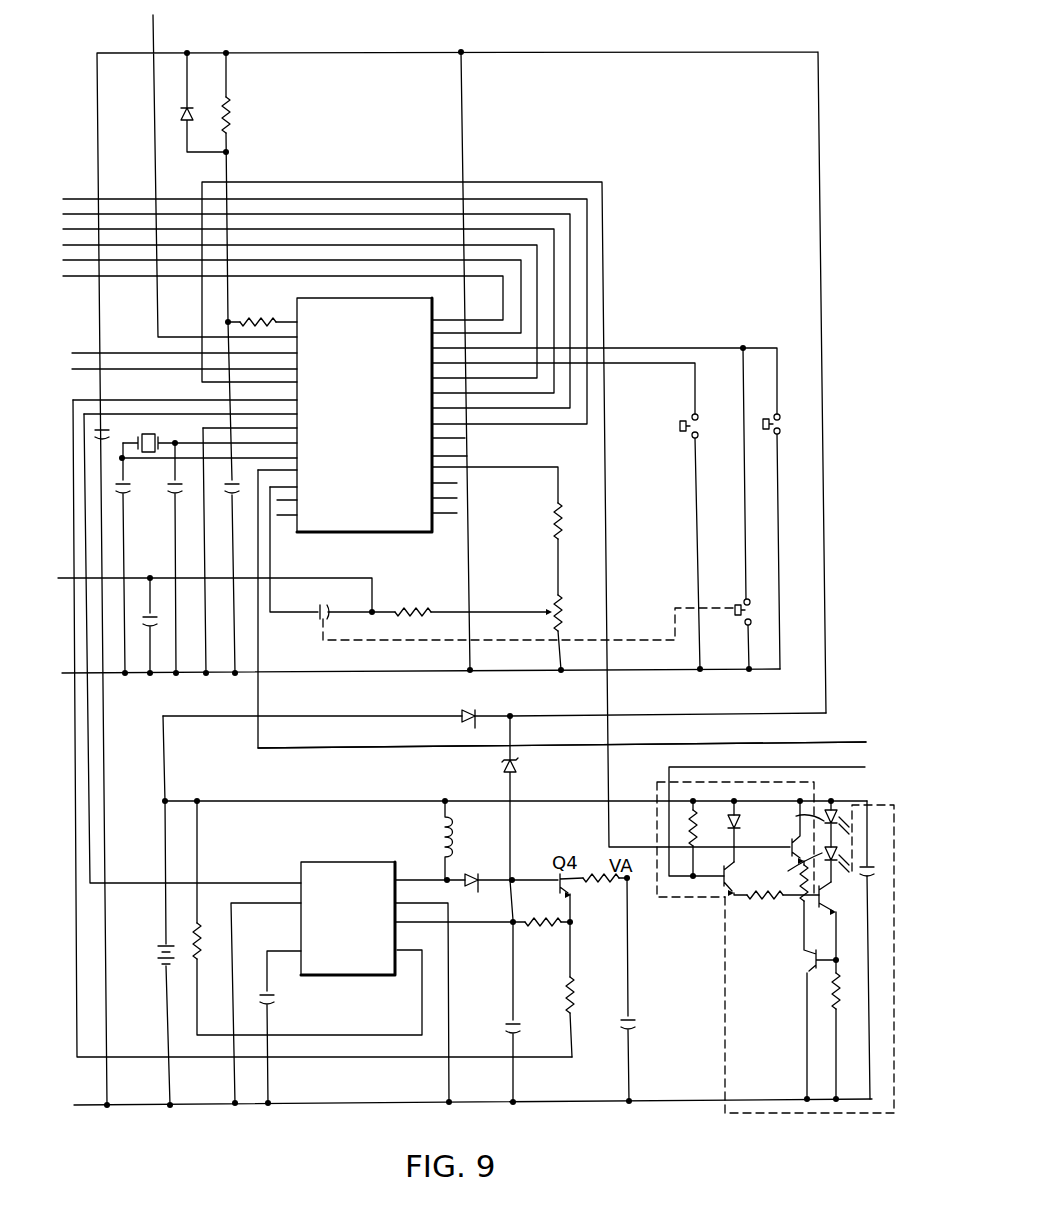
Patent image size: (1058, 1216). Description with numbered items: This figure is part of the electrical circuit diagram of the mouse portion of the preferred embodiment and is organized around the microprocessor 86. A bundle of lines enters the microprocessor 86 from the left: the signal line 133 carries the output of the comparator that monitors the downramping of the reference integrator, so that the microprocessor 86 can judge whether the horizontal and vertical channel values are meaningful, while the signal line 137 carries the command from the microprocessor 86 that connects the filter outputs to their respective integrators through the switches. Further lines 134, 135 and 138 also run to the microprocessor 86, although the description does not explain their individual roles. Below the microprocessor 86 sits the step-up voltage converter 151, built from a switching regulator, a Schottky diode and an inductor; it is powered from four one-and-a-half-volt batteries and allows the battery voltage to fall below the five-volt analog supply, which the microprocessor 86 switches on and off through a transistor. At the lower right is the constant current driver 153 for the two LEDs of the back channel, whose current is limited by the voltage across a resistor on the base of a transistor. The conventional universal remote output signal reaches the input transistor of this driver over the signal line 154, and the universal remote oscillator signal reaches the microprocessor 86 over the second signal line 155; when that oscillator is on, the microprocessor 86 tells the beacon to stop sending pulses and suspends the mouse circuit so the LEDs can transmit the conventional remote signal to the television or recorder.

The microprocessor 86 is at (364, 415).
The signal line 133 is at (78, 199).
The signal line 134 is at (108, 263).
The signal line 135 is at (84, 277).
The signal line 137 is at (136, 214).
The signal line 138 is at (168, 229).
The step-up voltage converter 151 is at (281, 845).
The constant current driver 153 is at (725, 977).
The signal line 154 is at (695, 767).
The second signal line 155 is at (710, 742).